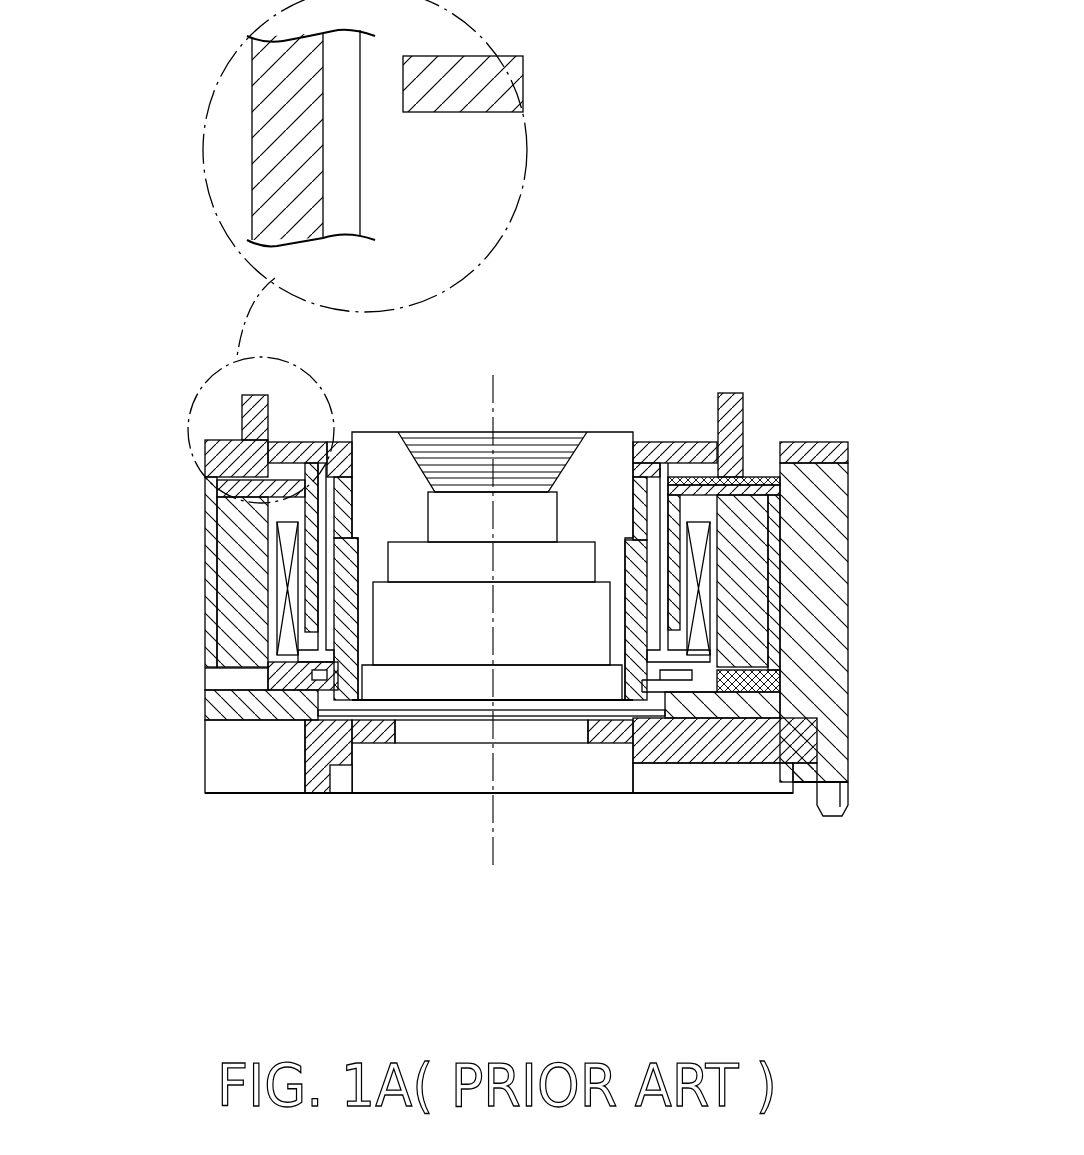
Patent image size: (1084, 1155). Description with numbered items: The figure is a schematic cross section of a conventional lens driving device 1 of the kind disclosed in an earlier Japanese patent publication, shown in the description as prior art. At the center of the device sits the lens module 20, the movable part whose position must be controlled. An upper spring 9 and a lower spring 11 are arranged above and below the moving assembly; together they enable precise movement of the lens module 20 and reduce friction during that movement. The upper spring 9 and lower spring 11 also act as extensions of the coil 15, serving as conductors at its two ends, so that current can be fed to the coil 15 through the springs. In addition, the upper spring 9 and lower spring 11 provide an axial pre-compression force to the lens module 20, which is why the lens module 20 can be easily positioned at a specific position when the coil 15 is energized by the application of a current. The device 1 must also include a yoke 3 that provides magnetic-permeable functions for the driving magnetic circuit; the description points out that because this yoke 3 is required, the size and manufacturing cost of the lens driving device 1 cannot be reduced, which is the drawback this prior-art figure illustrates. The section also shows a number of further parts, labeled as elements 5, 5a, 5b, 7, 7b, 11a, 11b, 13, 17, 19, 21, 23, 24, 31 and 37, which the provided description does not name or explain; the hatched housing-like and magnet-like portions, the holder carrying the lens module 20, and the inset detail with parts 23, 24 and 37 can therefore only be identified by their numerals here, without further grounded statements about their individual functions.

The lens driving device 1 is at (150, 527).
The yoke 3 is at (780, 645).
The housing 5 is at (810, 586).
The housing base 5a is at (828, 750).
The housing bottom portion 5b is at (276, 706).
The lens holder 7 is at (634, 668).
The lens holder bottom flange 7b is at (278, 664).
The upper spring 9 is at (709, 462).
The lower spring 11 is at (672, 686).
The base plate column 11a is at (328, 686).
The base plate side portion 11b is at (235, 707).
The magnet 13 is at (744, 531).
The coil 15 is at (698, 650).
The spacer 17 is at (778, 675).
The bottom plate 19 is at (775, 760).
The lens module 20 is at (617, 648).
The cover plate 21 is at (773, 473).
The upper spring post 23 is at (731, 395).
The upper spring plate 24 is at (672, 442).
The coil 31 is at (307, 601).
The spring sheet 37 is at (337, 71).